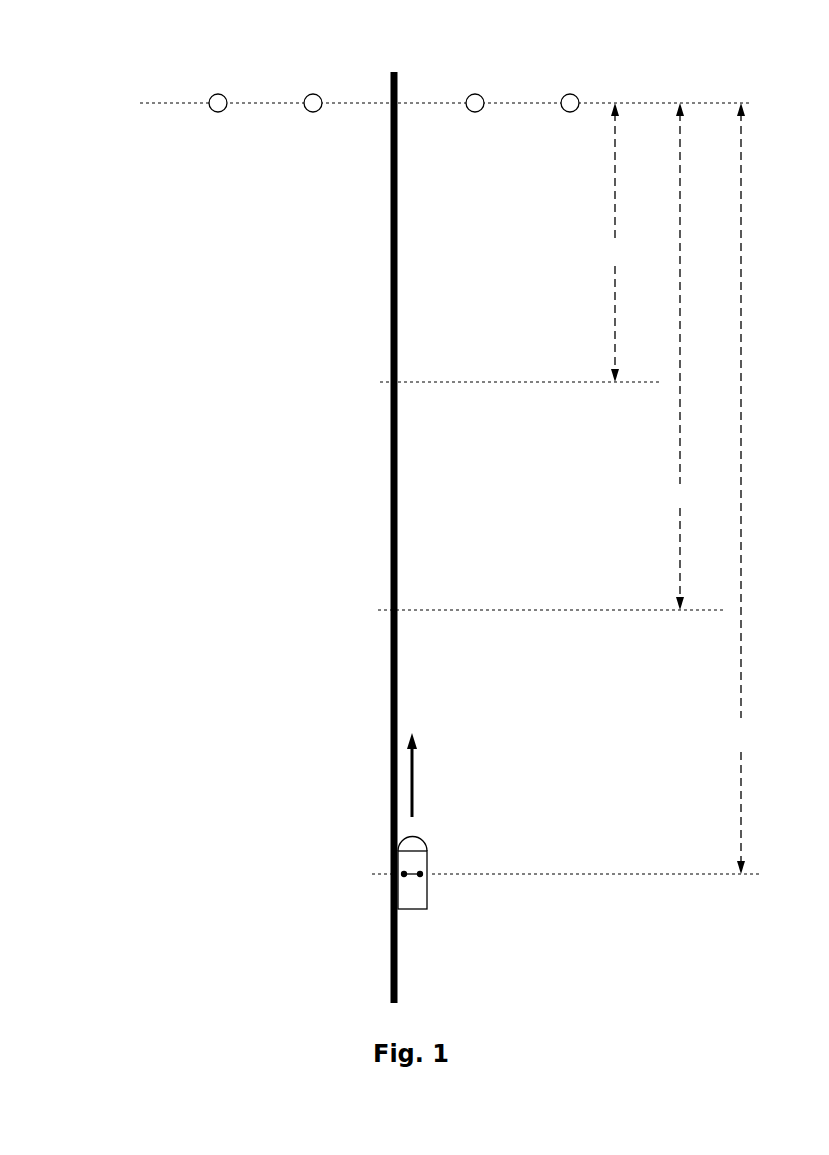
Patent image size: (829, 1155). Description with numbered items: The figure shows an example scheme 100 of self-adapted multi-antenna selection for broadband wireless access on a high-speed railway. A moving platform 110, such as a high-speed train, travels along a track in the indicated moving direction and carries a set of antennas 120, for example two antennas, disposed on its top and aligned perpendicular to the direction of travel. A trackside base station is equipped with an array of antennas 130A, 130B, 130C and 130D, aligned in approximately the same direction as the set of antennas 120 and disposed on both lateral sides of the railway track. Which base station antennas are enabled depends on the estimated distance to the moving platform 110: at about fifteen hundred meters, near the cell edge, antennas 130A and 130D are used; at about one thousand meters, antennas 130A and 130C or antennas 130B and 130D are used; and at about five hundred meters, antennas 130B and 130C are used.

The scheme 100 is at (95, 16).
The moving platform 110 is at (441, 846).
The set of antennas 120 is at (412, 877).
The antenna 130A is at (238, 85).
The antenna 130B is at (333, 85).
The antenna 130C is at (495, 85).
The antenna 130D is at (590, 85).